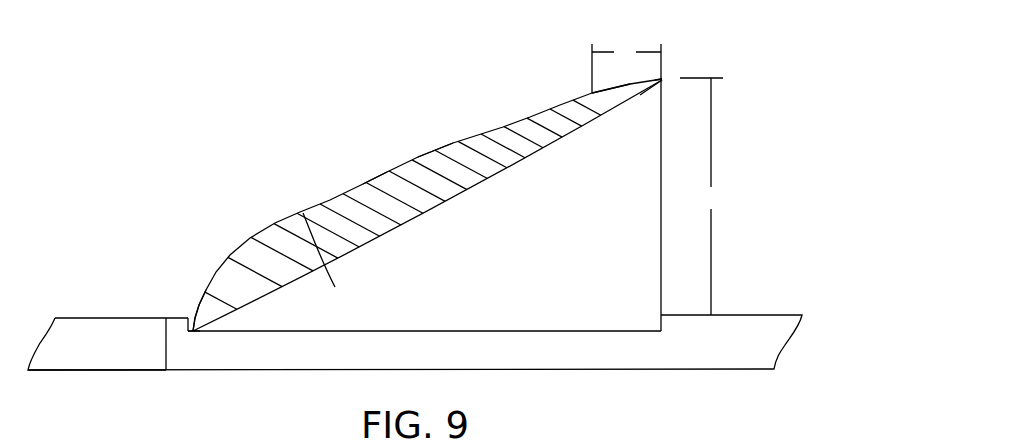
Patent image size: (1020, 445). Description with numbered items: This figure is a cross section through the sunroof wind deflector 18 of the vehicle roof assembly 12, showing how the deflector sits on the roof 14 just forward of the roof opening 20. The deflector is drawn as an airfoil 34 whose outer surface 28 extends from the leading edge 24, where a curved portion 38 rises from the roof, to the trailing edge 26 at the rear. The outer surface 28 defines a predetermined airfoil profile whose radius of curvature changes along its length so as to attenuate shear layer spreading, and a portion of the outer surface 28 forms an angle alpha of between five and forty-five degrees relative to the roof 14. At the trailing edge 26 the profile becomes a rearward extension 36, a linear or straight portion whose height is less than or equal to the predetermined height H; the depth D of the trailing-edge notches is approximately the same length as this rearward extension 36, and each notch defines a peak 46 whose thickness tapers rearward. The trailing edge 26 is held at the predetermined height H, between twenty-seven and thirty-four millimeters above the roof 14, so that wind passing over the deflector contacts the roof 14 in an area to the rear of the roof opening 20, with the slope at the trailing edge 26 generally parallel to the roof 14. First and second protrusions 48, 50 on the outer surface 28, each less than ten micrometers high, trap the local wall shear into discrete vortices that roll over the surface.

The roof assembly 12 is at (427, 191).
The roof 14 is at (108, 317).
The sunroof wind deflector 18 is at (430, 213).
The roof opening 20 is at (713, 345).
The leading edge 24 is at (192, 332).
The trailing edge 26 is at (663, 79).
The outer surface 28 is at (252, 243).
The airfoil 34 is at (303, 213).
The rearward extension 36 is at (608, 103).
The curved portion 38 is at (197, 305).
The peak 46 is at (655, 85).
The first protrusion 48 is at (372, 172).
The second protrusion 50 is at (418, 155).
The angle alpha is at (338, 330).
The depth of the notches D is at (626, 67).
The predetermined height H is at (701, 196).